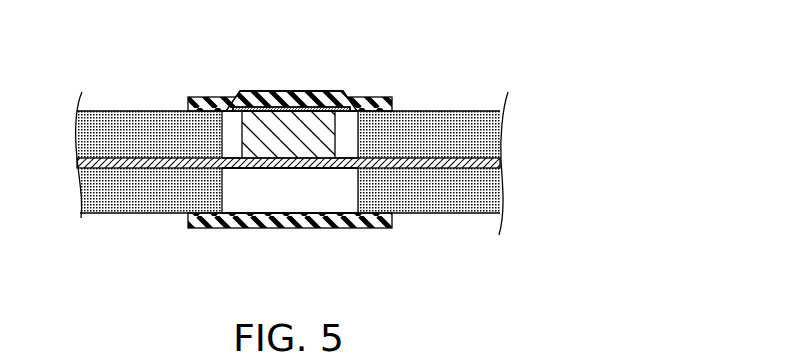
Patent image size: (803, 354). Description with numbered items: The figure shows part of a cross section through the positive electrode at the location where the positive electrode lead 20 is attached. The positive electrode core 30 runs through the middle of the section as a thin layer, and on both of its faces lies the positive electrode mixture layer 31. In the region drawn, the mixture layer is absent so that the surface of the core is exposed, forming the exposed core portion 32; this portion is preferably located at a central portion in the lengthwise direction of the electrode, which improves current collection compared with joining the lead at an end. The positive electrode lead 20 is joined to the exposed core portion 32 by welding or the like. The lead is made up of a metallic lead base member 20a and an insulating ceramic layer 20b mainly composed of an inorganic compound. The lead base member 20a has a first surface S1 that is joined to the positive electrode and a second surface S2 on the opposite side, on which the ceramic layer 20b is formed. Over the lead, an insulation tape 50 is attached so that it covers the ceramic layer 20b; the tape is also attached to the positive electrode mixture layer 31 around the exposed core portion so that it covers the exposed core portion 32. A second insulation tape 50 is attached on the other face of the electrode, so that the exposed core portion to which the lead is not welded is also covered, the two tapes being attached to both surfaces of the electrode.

The positive electrode lead 20 is at (312, 94).
The lead base member 20a is at (322, 125).
The ceramic layer 20b is at (305, 91).
The positive electrode core 30 is at (292, 172).
The positive electrode mixture layer 31 is at (472, 117).
The exposed core portion 32 is at (230, 152).
The insulation tape 50 is at (193, 97).
The first surface S1 is at (290, 170).
The second surface S2 is at (253, 91).